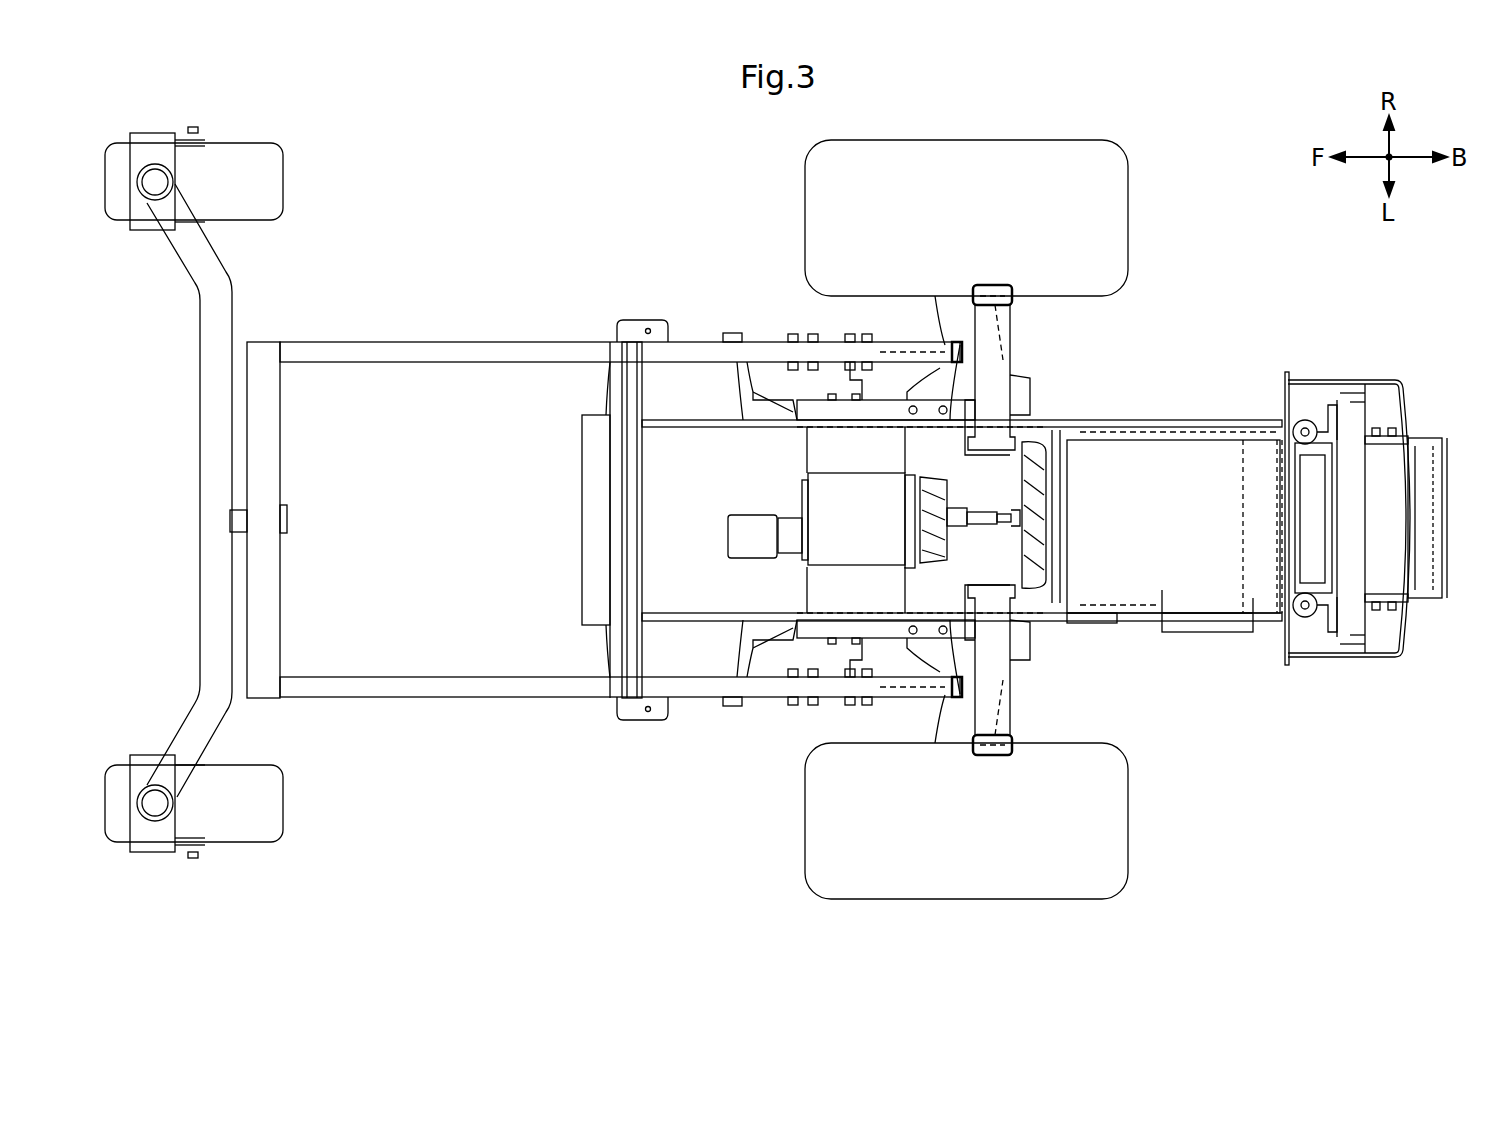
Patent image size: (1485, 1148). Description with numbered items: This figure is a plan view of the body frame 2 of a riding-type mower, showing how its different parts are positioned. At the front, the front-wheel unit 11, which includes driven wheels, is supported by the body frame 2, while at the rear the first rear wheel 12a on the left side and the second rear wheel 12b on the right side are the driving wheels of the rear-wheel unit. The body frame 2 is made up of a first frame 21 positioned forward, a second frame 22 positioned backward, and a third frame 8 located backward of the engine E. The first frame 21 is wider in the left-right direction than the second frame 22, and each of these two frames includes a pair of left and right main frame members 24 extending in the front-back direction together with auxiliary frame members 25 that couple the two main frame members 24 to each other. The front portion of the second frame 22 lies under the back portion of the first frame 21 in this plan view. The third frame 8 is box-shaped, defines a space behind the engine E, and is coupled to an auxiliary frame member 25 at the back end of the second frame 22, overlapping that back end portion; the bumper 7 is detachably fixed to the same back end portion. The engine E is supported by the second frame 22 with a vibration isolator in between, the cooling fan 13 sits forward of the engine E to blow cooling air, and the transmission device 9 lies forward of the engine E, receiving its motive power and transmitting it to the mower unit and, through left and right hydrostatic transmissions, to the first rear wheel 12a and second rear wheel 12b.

The body frame 2 is at (551, 248).
The bumper 7 is at (1427, 437).
The third frame 8 is at (1352, 660).
The transmission device 9 is at (820, 598).
The front-wheel unit 11 is at (250, 155).
The first rear wheel 12a is at (1097, 887).
The second rear wheel 12b is at (1097, 150).
The cooling fan 13 is at (1037, 452).
The first frame 21 is at (780, 522).
The second frame 22 is at (1173, 532).
The main frame member 24 is at (1163, 683).
The auxiliary frame member 25 is at (270, 470).
The engine E is at (1195, 450).